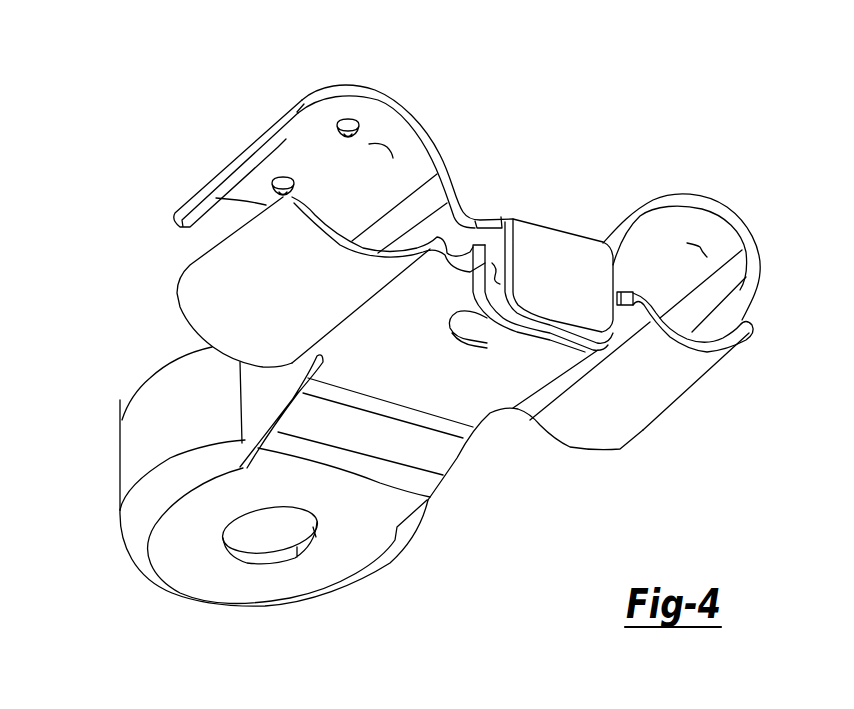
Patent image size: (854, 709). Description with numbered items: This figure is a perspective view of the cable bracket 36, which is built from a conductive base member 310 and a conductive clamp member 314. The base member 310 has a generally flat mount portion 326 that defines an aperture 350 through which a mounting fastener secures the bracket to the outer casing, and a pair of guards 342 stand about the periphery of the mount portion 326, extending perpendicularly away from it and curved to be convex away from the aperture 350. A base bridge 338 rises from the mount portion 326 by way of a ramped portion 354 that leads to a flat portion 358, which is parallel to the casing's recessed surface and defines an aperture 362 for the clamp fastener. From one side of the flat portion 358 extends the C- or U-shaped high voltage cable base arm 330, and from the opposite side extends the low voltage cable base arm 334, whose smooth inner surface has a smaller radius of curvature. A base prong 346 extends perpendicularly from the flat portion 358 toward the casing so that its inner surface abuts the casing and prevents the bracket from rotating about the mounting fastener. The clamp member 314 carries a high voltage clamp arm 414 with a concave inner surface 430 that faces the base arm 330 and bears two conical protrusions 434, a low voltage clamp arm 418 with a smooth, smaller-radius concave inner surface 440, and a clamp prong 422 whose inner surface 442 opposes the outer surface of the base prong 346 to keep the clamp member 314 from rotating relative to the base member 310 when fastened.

The cable bracket 36 is at (104, 206).
The base member 310 is at (679, 418).
The clamp member 314 is at (718, 197).
The mount portion 326 is at (185, 556).
The high voltage cable base arm 330 is at (177, 307).
The low voltage cable base arm 334 is at (707, 375).
The base bridge 338 is at (473, 427).
The guards 342 is at (137, 432).
The base prong 346 is at (540, 330).
The aperture 350 is at (254, 562).
The ramped portion 354 is at (413, 448).
The flat portion 358 is at (370, 332).
The aperture 362 is at (488, 340).
The high voltage clamp arm 414 is at (175, 213).
The low voltage clamp arm 418 is at (760, 265).
The clamp prong 422 is at (543, 246).
The concave inner surface 430 is at (387, 148).
The protrusions 434 is at (350, 119).
The concave inner surface 440 is at (703, 247).
The inner surface 442 is at (487, 273).